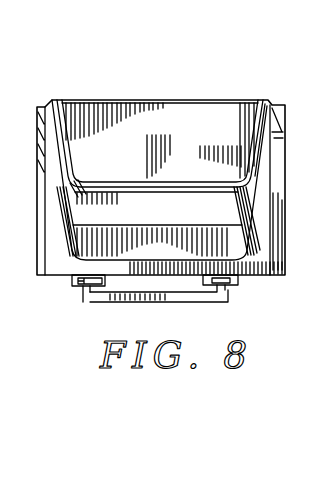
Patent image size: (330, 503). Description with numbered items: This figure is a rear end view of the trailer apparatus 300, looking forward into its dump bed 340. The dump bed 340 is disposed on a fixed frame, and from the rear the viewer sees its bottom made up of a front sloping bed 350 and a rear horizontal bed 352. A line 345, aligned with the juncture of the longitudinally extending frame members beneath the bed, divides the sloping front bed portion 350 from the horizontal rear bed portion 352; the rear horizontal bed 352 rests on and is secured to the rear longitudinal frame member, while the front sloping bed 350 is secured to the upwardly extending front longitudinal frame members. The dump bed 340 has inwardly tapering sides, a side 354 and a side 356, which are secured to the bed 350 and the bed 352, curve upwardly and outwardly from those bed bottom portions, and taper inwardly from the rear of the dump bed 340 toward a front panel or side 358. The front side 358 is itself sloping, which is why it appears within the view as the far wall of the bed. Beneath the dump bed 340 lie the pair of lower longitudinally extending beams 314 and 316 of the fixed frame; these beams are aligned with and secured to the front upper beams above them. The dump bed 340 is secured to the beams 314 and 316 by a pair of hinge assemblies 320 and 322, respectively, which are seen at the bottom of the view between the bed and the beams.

The trailer apparatus 300 is at (214, 94).
The dump bed 340 is at (290, 130).
The front sloping bed 350 is at (134, 103).
The front panel or side 358 is at (190, 117).
The side 354 is at (261, 140).
The side 356 is at (68, 170).
The rear horizontal bed 352 is at (137, 232).
The line 345 is at (221, 224).
The hinge assembly 322 is at (72, 281).
The lower beam 316 is at (83, 298).
The hinge assembly 320 is at (238, 280).
The lower beam 314 is at (227, 302).